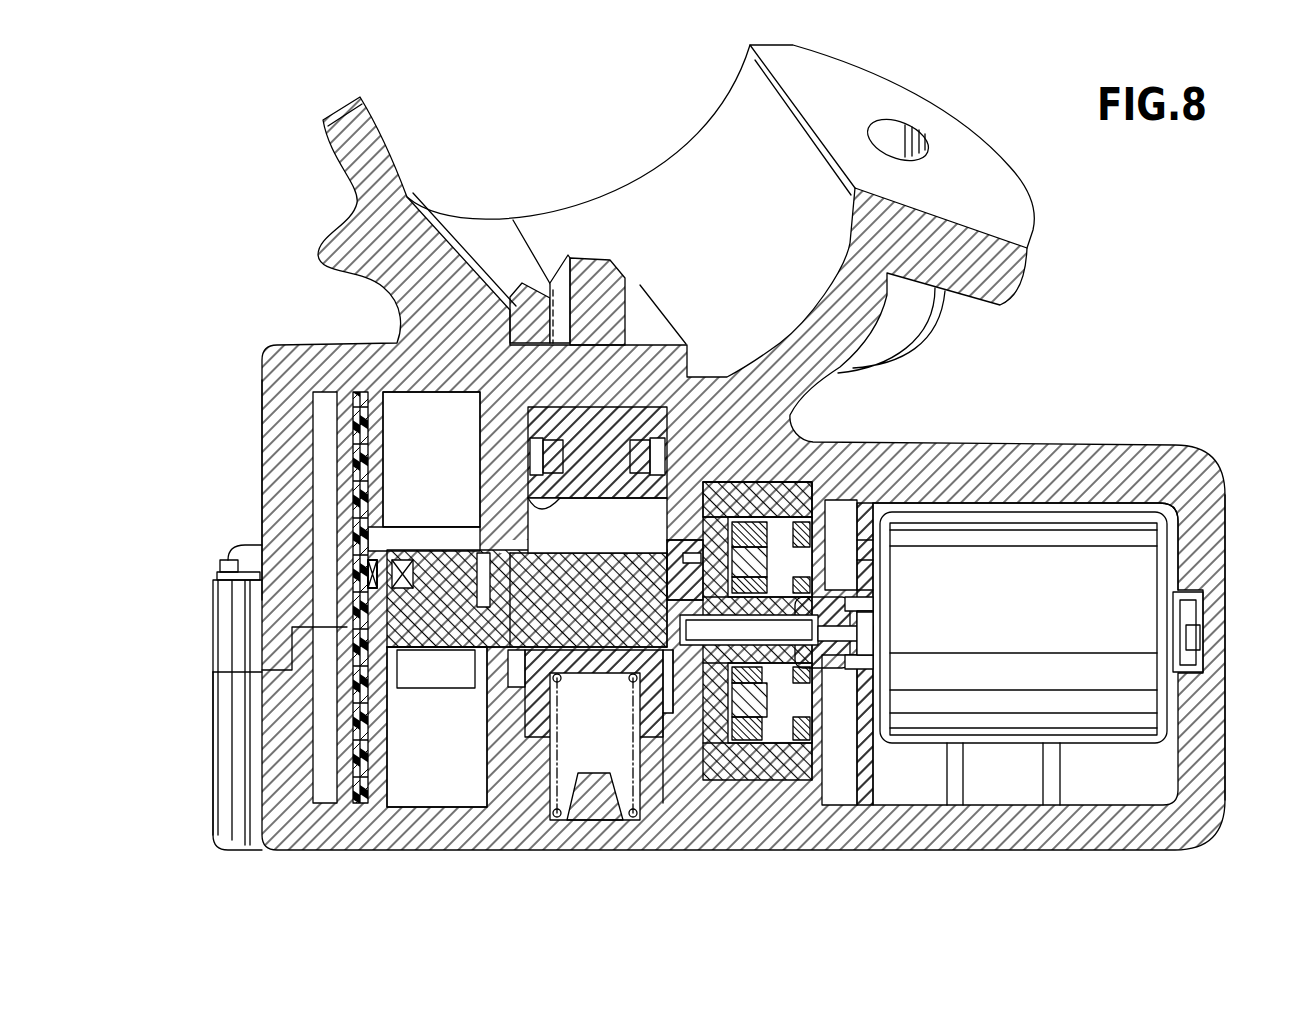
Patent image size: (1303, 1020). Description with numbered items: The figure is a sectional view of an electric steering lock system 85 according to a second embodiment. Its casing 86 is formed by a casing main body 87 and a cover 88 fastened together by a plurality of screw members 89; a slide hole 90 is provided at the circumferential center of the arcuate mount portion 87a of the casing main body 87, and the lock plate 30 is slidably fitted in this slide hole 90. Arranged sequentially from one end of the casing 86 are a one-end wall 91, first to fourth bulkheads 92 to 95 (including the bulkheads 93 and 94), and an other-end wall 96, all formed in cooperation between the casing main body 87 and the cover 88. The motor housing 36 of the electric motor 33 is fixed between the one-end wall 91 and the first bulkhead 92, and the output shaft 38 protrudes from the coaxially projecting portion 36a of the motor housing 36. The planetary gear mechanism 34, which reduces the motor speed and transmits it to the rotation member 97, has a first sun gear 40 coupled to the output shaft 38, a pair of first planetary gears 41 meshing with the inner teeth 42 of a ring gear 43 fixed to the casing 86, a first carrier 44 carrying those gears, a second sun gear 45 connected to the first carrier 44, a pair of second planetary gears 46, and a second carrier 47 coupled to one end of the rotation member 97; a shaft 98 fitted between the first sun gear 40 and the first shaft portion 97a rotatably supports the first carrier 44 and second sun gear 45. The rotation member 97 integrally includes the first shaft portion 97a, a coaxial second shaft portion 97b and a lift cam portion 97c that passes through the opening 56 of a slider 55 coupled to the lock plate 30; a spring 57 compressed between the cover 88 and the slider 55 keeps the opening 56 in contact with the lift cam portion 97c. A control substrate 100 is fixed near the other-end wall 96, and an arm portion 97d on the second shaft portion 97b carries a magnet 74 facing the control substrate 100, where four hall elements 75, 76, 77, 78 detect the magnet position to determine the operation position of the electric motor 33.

The lock plate 30 is at (572, 262).
The electric motor 33 is at (1066, 512).
The planetary gear mechanism 34 is at (796, 476).
The motor housing 36 is at (1076, 629).
The projecting portion 36a is at (864, 648).
The output shaft 38 is at (863, 618).
The first sun gear 40 is at (866, 670).
The first planetary gears 41 is at (812, 565).
The inner teeth 42 is at (670, 540).
The ring gear 43 is at (738, 520).
The first carrier 44 is at (778, 758).
The second sun gear 45 is at (842, 561).
The second planetary gears 46 is at (752, 524).
The second carrier 47 is at (700, 548).
The slider 55 is at (510, 312).
The opening 56 is at (600, 505).
The spring 57 is at (557, 818).
The magnet 74 is at (400, 562).
The hall element 75 is at (372, 565).
The hall element 76 is at (372, 574).
The hall element 77 is at (372, 574).
The hall element 78 is at (372, 574).
The electric steering lock system 85 is at (937, 440).
The casing 86 is at (157, 620).
The casing main body 87 is at (240, 628).
The arcuate mount portion 87a is at (672, 188).
The cover 88 is at (230, 740).
The screw members 89 is at (240, 558).
The slide hole 90 is at (587, 332).
The one-end wall 91 is at (1216, 545).
The first bulkhead 92 is at (873, 595).
The third bulkhead 93 is at (843, 768).
The fourth bulkhead 94 is at (680, 568).
The bulkhead 95 is at (522, 576).
The other-end wall 96 is at (270, 443).
The rotation member 97 is at (603, 655).
The first shaft portion 97a is at (694, 662).
The second shaft portion 97b is at (487, 680).
The lift cam portion 97c is at (548, 530).
The arm portion 97d is at (422, 552).
The shaft 98 is at (630, 712).
The control substrate 100 is at (348, 421).